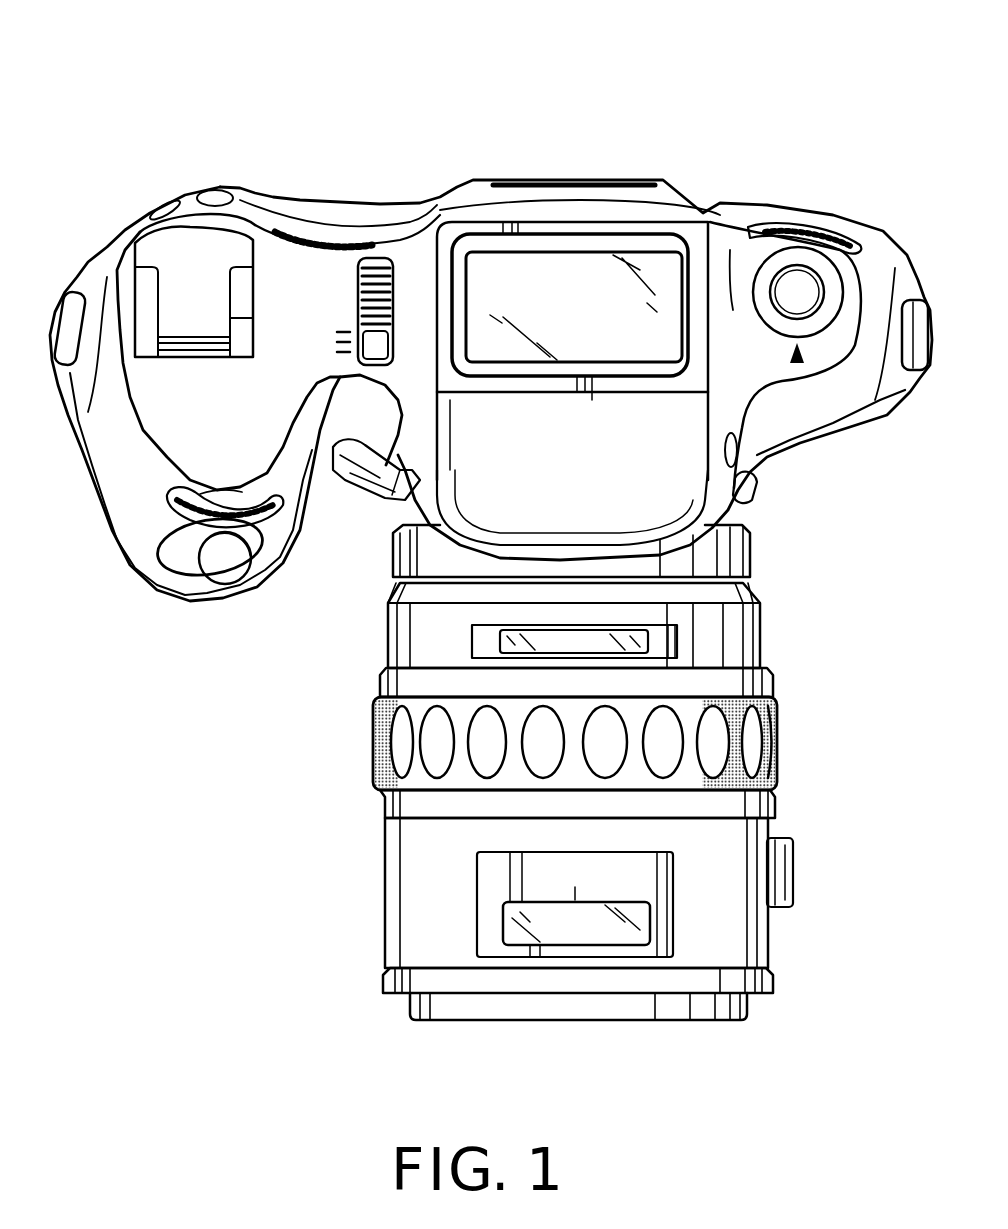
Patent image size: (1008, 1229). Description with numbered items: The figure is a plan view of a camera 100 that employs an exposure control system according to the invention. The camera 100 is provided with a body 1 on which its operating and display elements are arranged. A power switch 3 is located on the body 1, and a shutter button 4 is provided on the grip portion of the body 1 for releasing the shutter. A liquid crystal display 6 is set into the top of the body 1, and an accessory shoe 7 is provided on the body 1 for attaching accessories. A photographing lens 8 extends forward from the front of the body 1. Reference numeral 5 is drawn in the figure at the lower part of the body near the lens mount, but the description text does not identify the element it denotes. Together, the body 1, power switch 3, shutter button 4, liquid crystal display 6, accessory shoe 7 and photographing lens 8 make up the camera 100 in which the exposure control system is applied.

The camera 100 is at (796, 72).
The body 1 is at (712, 176).
The power switch 3 is at (374, 250).
The shutter button 4 is at (228, 565).
The lens mount front panel 5 is at (665, 480).
The liquid crystal display 6 is at (568, 290).
The accessory shoe 7 is at (203, 245).
The photographing lens 8 is at (420, 903).